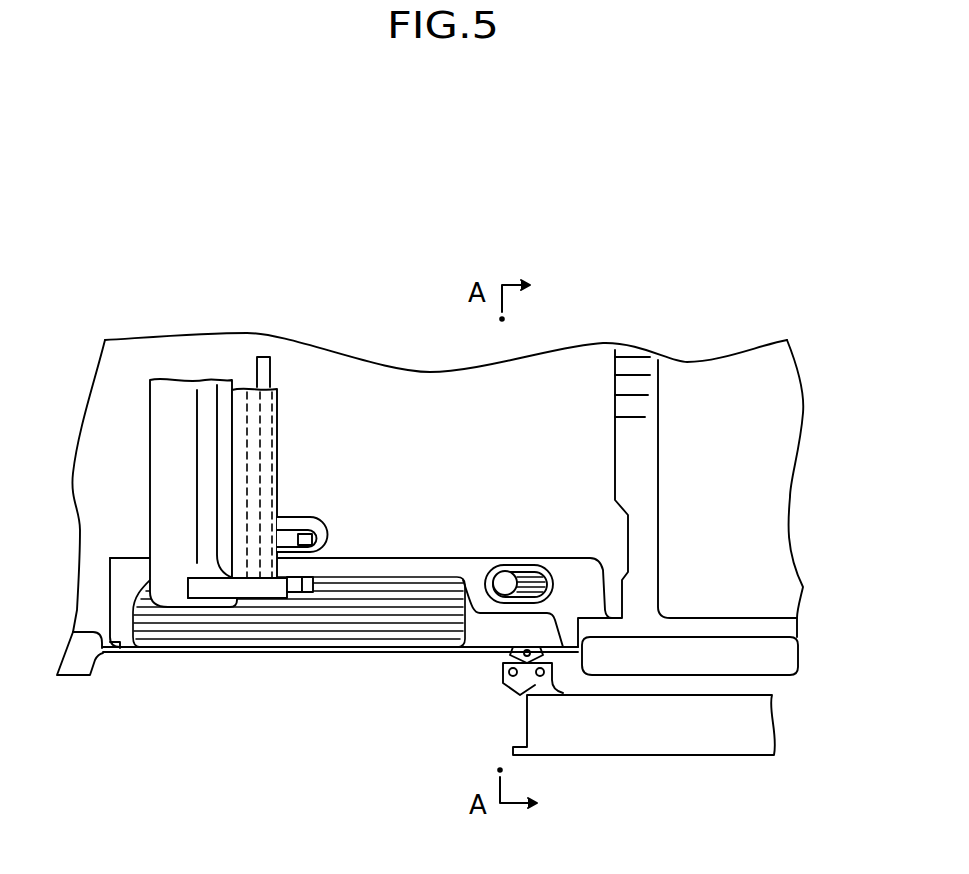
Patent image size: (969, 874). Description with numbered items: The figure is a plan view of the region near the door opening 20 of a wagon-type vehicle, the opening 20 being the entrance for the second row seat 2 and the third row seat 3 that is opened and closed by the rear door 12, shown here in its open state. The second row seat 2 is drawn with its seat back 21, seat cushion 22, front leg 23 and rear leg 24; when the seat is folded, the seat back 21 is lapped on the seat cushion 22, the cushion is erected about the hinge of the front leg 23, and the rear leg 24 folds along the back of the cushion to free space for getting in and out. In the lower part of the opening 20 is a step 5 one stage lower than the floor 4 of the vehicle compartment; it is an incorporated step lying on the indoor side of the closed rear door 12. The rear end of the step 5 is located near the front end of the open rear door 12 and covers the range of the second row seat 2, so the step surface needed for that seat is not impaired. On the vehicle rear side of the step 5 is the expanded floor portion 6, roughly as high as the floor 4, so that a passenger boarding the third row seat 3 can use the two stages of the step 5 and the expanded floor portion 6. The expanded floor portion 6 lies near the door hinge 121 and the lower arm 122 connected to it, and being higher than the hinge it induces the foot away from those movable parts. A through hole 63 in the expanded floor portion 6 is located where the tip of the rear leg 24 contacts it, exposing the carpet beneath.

The second row seat 2 is at (231, 403).
The seat back 21 is at (173, 407).
The seat cushion 22 is at (277, 420).
The front leg 23 is at (288, 517).
The rear leg 24 is at (297, 593).
The third row seat 3 is at (710, 410).
The floor 4 is at (417, 452).
The step 5 is at (222, 627).
The expanded floor portion 6 is at (528, 577).
The through hole 63 is at (502, 573).
The rear door 12 is at (647, 757).
The door hinge 121 is at (512, 662).
The lower arm 122 is at (522, 688).
The door opening 20 is at (140, 678).